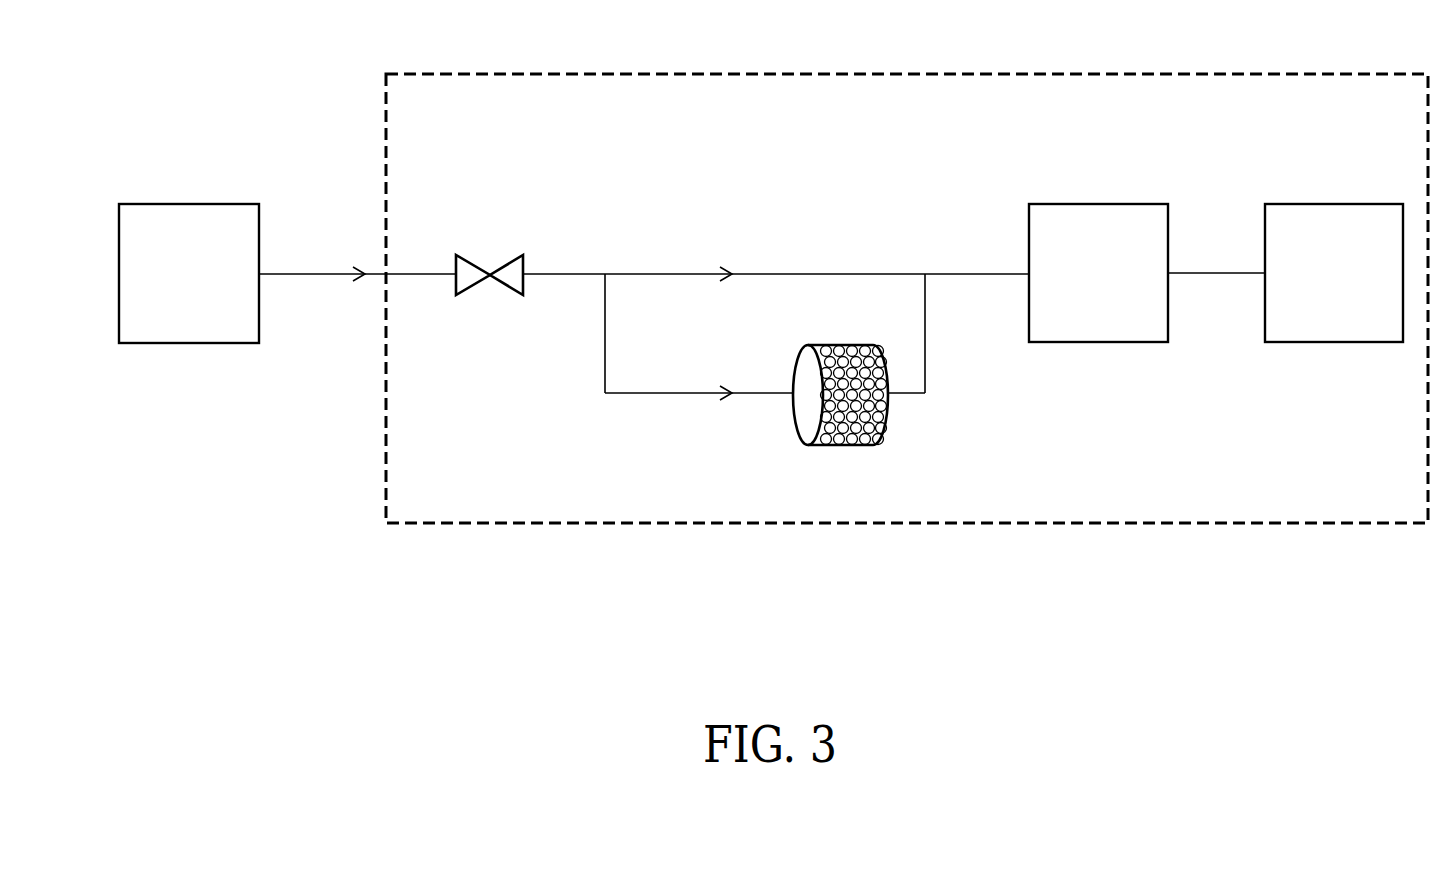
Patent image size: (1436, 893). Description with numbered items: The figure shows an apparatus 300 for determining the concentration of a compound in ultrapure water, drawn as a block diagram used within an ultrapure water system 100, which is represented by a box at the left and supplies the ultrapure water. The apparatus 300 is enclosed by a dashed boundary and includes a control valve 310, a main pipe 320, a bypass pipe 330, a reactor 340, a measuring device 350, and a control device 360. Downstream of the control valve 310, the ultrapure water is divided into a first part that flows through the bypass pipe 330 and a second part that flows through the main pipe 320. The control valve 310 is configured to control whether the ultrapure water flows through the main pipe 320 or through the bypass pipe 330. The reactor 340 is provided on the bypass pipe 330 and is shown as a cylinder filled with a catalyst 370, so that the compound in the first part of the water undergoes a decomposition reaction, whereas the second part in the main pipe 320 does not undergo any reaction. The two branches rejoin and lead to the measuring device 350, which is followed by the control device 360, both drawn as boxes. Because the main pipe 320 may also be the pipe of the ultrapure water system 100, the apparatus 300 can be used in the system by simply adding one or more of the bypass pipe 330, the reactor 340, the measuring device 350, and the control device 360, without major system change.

The ultrapure water system 100 is at (161, 88).
The apparatus 300 is at (900, 74).
The control valve 310 is at (478, 257).
The main pipe 320 is at (819, 272).
The bypass pipe 330 is at (757, 397).
The reactor 340 is at (864, 432).
The measuring device 350 is at (1100, 204).
The control device 360 is at (1335, 204).
The catalyst 370 is at (885, 418).